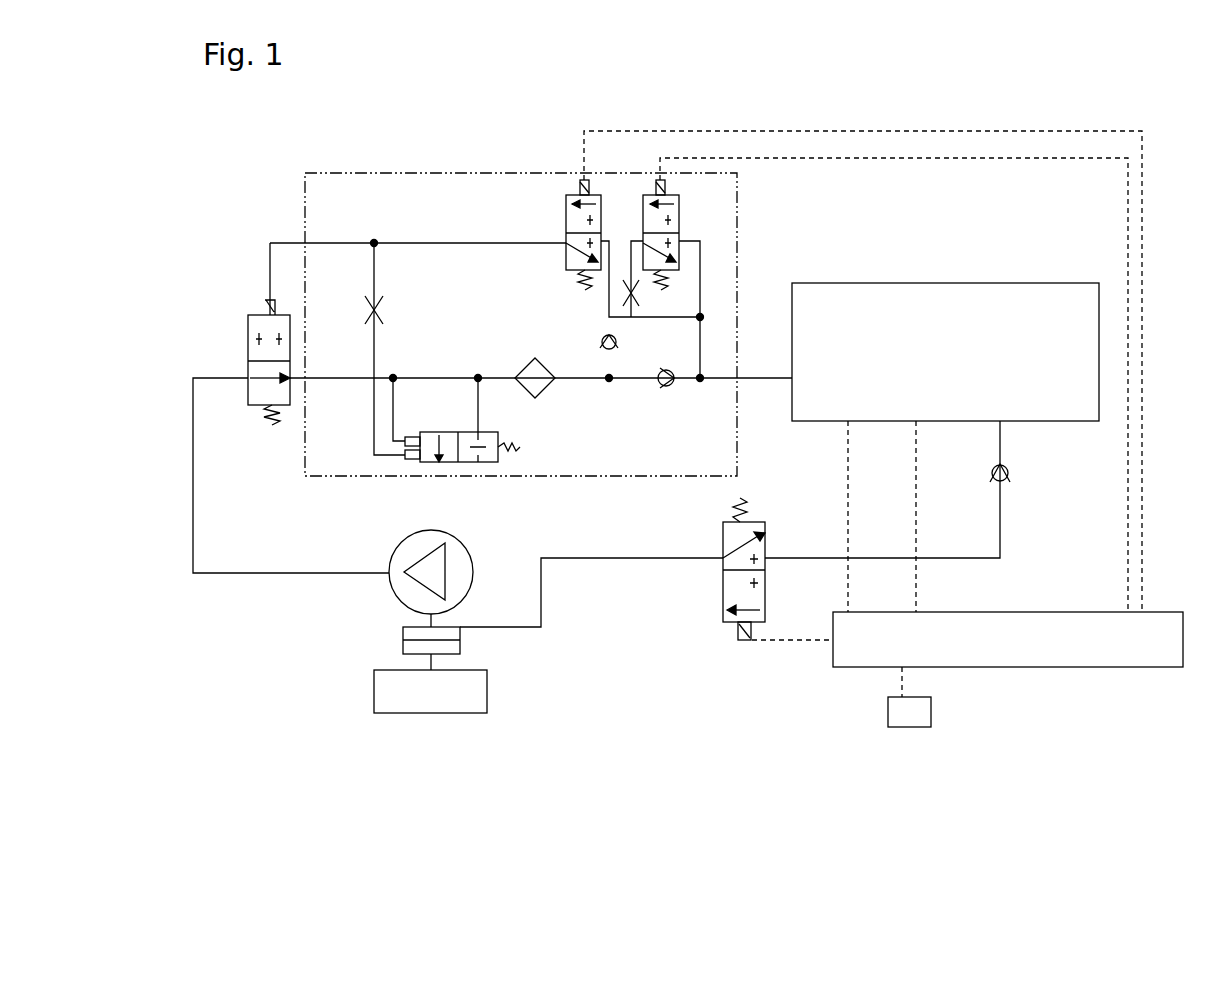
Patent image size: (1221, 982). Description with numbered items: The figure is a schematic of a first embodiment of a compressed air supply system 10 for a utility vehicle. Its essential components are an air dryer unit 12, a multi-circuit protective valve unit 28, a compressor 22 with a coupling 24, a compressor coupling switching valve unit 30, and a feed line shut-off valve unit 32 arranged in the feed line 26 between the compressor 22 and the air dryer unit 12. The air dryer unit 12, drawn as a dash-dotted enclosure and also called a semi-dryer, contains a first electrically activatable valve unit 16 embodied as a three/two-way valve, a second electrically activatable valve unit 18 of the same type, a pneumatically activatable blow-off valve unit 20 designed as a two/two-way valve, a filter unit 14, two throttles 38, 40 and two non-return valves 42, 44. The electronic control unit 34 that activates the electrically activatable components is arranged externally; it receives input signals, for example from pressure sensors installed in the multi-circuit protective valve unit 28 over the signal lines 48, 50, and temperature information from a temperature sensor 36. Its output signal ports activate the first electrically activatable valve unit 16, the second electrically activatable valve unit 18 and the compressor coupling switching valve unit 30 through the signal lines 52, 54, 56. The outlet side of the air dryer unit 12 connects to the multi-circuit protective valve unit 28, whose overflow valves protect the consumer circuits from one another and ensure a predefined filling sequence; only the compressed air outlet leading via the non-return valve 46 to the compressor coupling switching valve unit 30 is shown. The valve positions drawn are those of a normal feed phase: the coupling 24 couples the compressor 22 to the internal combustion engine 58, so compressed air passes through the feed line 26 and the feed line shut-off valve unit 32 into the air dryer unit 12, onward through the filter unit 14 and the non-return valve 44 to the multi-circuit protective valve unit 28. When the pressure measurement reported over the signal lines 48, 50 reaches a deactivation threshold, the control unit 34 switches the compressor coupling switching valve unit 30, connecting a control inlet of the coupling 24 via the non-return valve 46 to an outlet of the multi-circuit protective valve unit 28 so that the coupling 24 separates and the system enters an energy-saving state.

The compressed air supply system 10 is at (210, 667).
The air dryer unit 12 is at (398, 172).
The filter unit 14 is at (546, 390).
The first electrically activatable valve unit 16 is at (566, 216).
The second electrically activatable valve unit 18 is at (681, 212).
The blow-off valve unit 20 is at (450, 432).
The compressor 22 is at (466, 547).
The coupling 24 is at (402, 636).
The feed line 26 is at (194, 532).
The multi-circuit protective valve unit 28 is at (947, 368).
The compressor coupling switching valve unit 30 is at (723, 588).
The feed line shut-off valve unit 32 is at (240, 322).
The electronic control unit 34 is at (1008, 652).
The temperature sensor 36 is at (887, 716).
The throttle 38 is at (637, 292).
The throttle 40 is at (385, 310).
The non-return valve 42 is at (612, 338).
The non-return valve 44 is at (666, 369).
The non-return valve 46 is at (1009, 466).
The signal line 48 is at (846, 492).
The signal line 50 is at (914, 495).
The signal line 52 is at (1146, 534).
The signal line 54 is at (1126, 537).
The signal line 56 is at (779, 648).
The internal combustion engine 58 is at (489, 692).